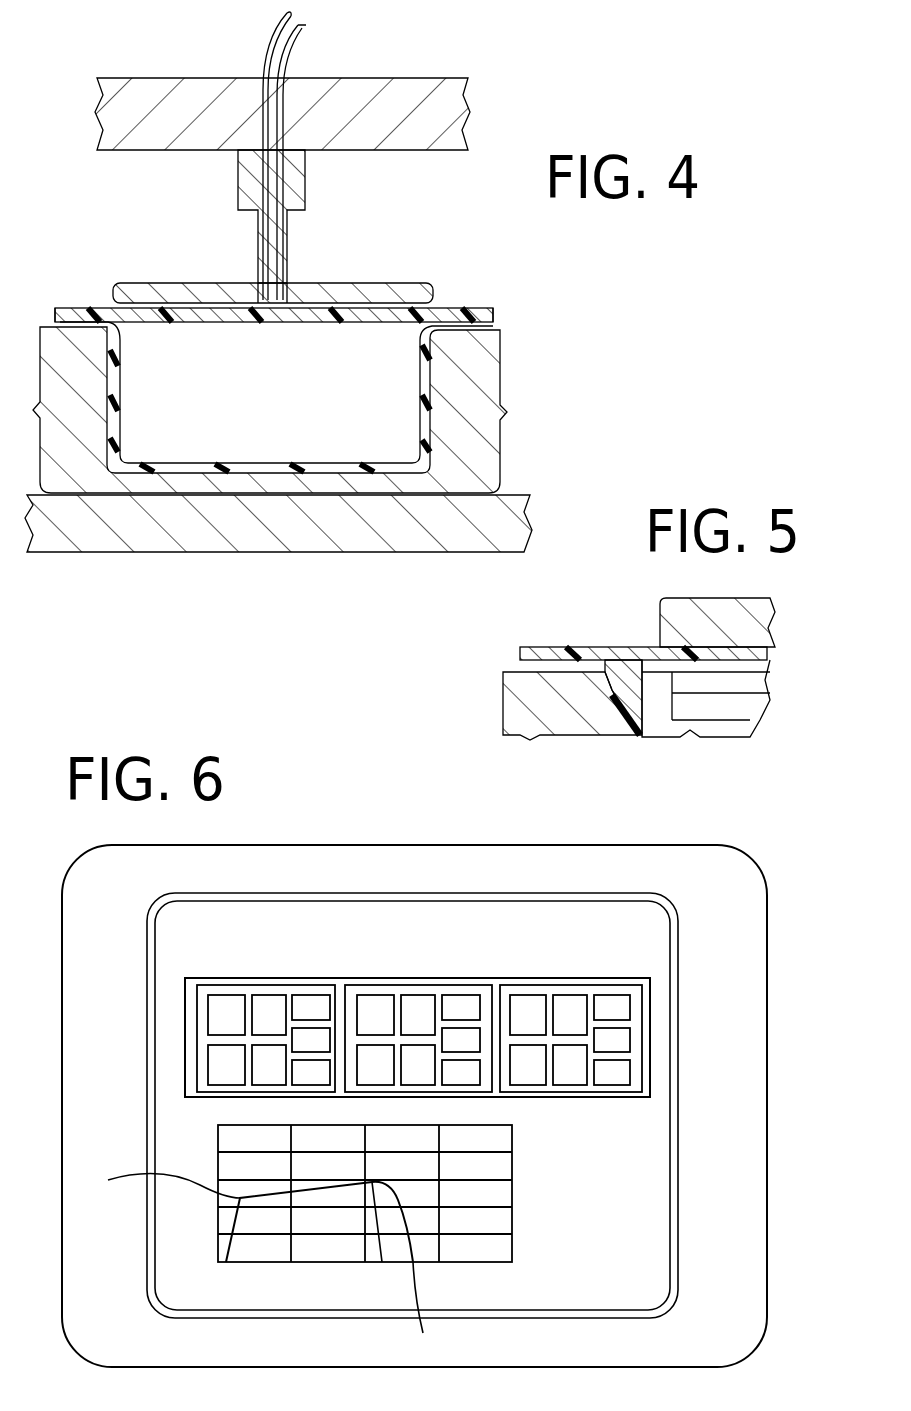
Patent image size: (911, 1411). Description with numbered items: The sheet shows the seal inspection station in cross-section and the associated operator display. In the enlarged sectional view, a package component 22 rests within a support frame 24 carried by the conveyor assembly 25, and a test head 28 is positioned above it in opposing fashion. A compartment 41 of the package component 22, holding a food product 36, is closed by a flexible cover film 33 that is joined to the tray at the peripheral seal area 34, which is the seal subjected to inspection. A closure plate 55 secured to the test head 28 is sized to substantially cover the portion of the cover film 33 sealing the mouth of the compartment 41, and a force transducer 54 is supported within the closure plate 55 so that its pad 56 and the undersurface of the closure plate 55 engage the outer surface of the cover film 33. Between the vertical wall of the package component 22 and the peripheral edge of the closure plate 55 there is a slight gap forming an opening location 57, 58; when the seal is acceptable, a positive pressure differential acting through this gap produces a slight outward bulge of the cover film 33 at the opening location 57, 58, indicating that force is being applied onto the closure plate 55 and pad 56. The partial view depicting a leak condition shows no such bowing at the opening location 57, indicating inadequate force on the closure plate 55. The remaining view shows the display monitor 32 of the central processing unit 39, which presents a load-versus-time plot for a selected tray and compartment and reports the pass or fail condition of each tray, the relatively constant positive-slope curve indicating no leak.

In FIG. 4, the package component 22 is at (427, 393).
In FIG. 5, the package component 22 is at (628, 733).
In FIG. 4, the support frame 24 is at (488, 444).
In FIG. 5, the support frame 24 is at (513, 714).
In FIG. 4, the conveyor assembly 25 is at (515, 525).
In FIG. 4, the test head 28 is at (437, 84).
In FIG. 6, the display monitor 32 is at (590, 922).
In FIG. 4, the flexible cover film 33 is at (350, 318).
In FIG. 4, the peripheral seal area 34 is at (72, 316).
In FIG. 5, the peripheral seal area 34 is at (516, 656).
In FIG. 5, the food product 36 is at (735, 706).
In FIG. 6, the central processing unit 39 is at (344, 845).
In FIG. 4, the compartment 41 is at (277, 403).
In FIG. 5, the compartment 41 is at (660, 722).
In FIG. 4, the force transducer 54 is at (275, 192).
In FIG. 4, the closure plate 55 is at (168, 293).
In FIG. 5, the closure plate 55 is at (765, 622).
In FIG. 4, the pad 56 is at (298, 292).
In FIG. 4, the opening location 57 is at (100, 318).
In FIG. 5, the opening location 57 is at (639, 655).
In FIG. 4, the opening location 58 is at (440, 318).